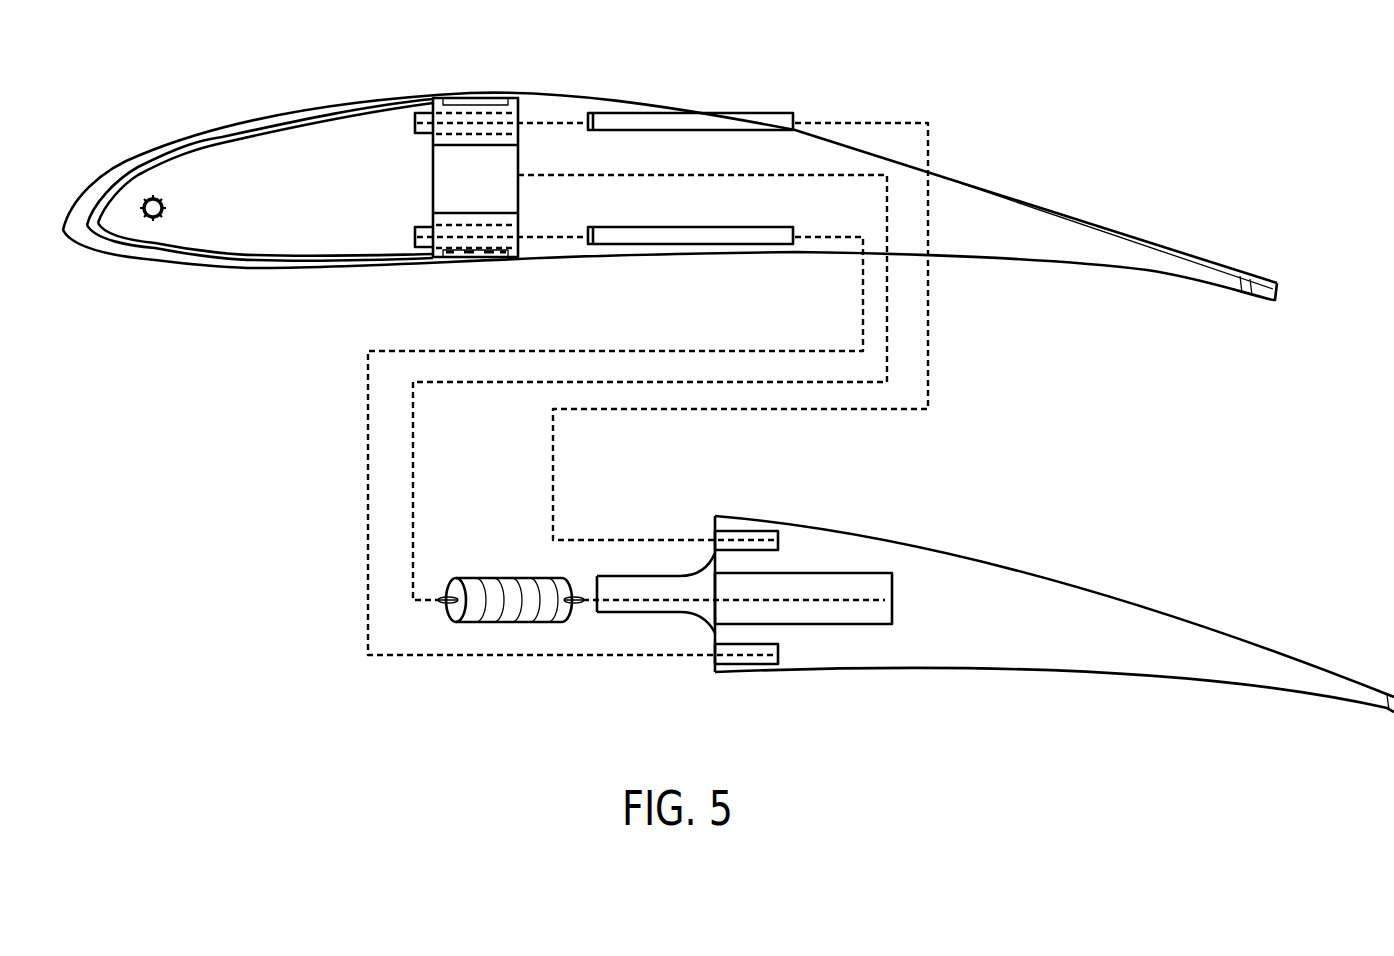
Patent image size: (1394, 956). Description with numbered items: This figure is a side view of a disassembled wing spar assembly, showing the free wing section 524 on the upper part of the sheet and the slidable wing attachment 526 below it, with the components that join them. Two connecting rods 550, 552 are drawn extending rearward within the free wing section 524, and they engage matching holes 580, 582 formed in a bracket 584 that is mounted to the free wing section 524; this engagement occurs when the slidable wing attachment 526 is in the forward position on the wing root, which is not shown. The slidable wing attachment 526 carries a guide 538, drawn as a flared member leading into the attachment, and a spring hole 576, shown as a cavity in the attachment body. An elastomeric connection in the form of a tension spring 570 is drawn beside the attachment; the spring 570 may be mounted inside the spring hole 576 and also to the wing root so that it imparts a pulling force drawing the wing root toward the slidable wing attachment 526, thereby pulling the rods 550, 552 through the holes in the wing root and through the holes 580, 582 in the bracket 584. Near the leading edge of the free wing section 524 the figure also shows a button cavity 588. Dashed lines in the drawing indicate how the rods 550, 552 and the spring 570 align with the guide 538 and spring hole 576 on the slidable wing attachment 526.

The free wing section 524 is at (245, 118).
The slidable wing attachment 526 is at (1054, 614).
The guide 538 is at (617, 587).
The connecting rod 550 is at (750, 238).
The connecting rod 552 is at (663, 118).
The tension spring 570 is at (475, 578).
The spring hole 576 is at (858, 603).
The matching hole 580 is at (415, 237).
The matching hole 582 is at (413, 128).
The bracket 584 is at (524, 88).
The button cavity 588 is at (163, 214).